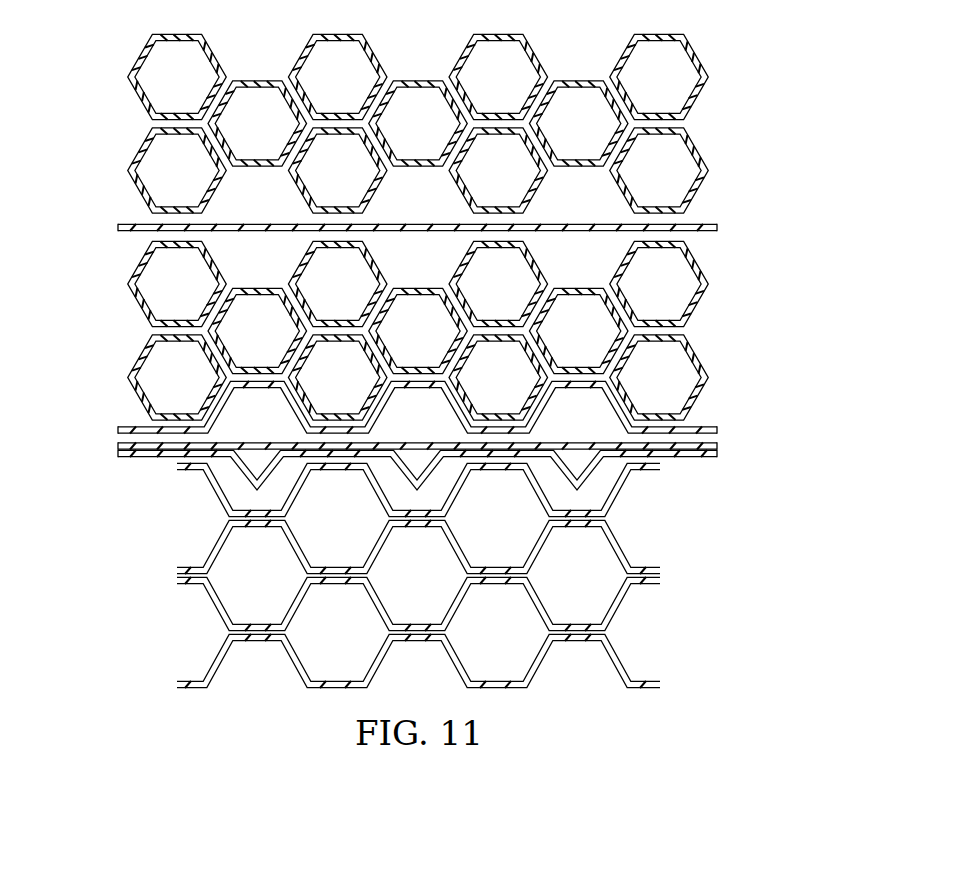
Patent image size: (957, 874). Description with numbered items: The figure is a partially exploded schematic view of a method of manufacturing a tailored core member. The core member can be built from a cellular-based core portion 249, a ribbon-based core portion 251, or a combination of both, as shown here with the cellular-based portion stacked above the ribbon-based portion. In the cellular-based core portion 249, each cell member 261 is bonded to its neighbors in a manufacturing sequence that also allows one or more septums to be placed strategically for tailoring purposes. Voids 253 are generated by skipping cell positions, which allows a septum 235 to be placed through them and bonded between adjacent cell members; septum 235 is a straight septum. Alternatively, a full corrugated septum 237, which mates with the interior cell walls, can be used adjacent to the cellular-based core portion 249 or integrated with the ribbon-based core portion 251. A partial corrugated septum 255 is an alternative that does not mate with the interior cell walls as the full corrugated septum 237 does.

The cellular-based core portion 249 is at (370, 120).
The cell member 261 is at (540, 52).
The septum 235 is at (717, 228).
The void 253 is at (455, 338).
The full corrugated septum 237 is at (717, 431).
The partial corrugated septum 255 is at (700, 461).
The ribbon-based core portion 251 is at (398, 569).